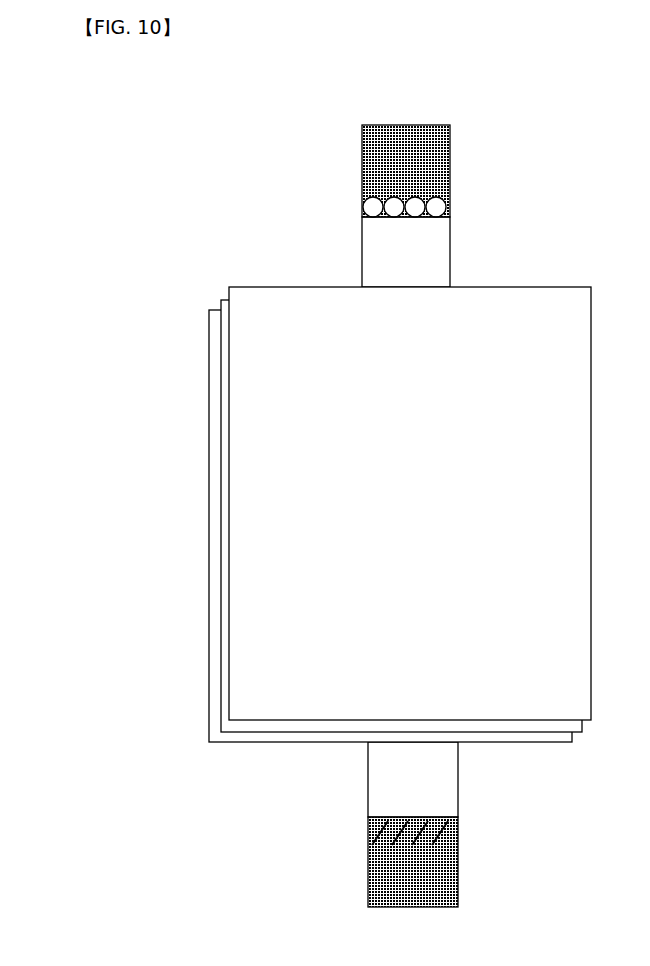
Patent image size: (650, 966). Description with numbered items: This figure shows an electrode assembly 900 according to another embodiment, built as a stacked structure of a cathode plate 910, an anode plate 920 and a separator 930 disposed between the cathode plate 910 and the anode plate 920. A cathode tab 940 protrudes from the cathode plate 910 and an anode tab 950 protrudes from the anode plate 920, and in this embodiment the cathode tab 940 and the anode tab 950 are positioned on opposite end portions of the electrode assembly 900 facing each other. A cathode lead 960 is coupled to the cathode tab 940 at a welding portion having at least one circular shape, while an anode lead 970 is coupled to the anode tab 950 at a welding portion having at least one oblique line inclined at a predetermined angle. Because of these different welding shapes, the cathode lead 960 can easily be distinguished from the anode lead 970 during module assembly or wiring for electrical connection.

The electrode assembly 900 is at (149, 159).
The cathode plate 910 is at (236, 460).
The anode plate 920 is at (214, 538).
The separator 930 is at (222, 500).
The cathode tab 940 is at (382, 240).
The anode tab 950 is at (431, 762).
The cathode lead 960 is at (375, 172).
The anode lead 970 is at (428, 838).